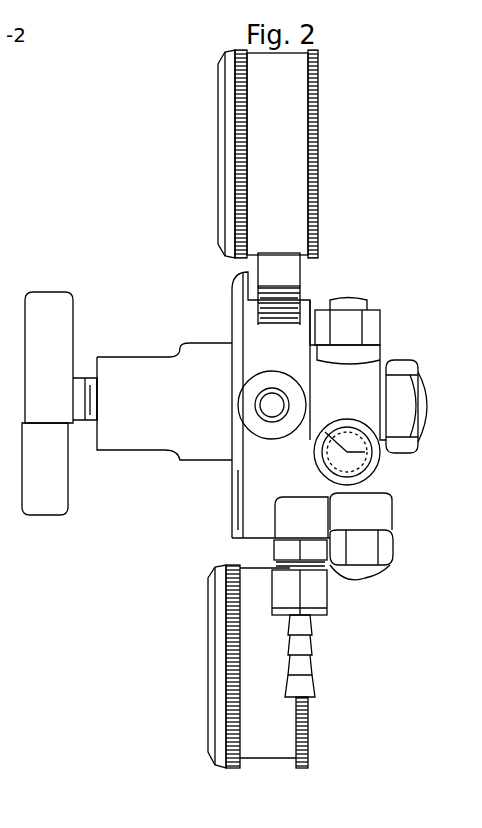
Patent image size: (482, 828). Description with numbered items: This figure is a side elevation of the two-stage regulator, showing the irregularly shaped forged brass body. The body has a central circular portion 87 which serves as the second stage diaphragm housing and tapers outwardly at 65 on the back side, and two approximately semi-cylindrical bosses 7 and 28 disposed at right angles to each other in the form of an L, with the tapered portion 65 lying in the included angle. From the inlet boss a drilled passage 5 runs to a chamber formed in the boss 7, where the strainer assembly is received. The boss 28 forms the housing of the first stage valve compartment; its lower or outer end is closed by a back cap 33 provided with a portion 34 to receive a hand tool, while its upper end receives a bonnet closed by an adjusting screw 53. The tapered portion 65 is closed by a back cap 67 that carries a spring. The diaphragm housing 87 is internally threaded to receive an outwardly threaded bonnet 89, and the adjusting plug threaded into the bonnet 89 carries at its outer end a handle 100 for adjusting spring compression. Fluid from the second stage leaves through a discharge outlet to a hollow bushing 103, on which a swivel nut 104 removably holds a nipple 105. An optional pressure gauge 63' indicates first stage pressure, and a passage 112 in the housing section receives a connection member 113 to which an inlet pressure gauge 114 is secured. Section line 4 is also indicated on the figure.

The inlet pressure gauge 114 is at (292, 171).
The connection member 113 is at (268, 259).
The passage 112 is at (268, 326).
The handle 100 is at (50, 300).
The central circular portion 87 is at (310, 387).
The bonnet 89 is at (236, 478).
The adjusting screw 53 is at (356, 300).
The tapered portion 65 is at (385, 367).
The drilled passage 5 is at (340, 410).
The back cap 67 is at (398, 398).
The boss 28 is at (375, 513).
The portion 34 is at (375, 545).
The back cap 33 is at (372, 578).
The hollow bushing 103 is at (275, 548).
The swivel nut 104 is at (320, 590).
The nipple 105 is at (312, 640).
The pressure gauge 63' is at (293, 666).
The boss 7 is at (245, 405).
The section line 4- 4 is at (346, 668).